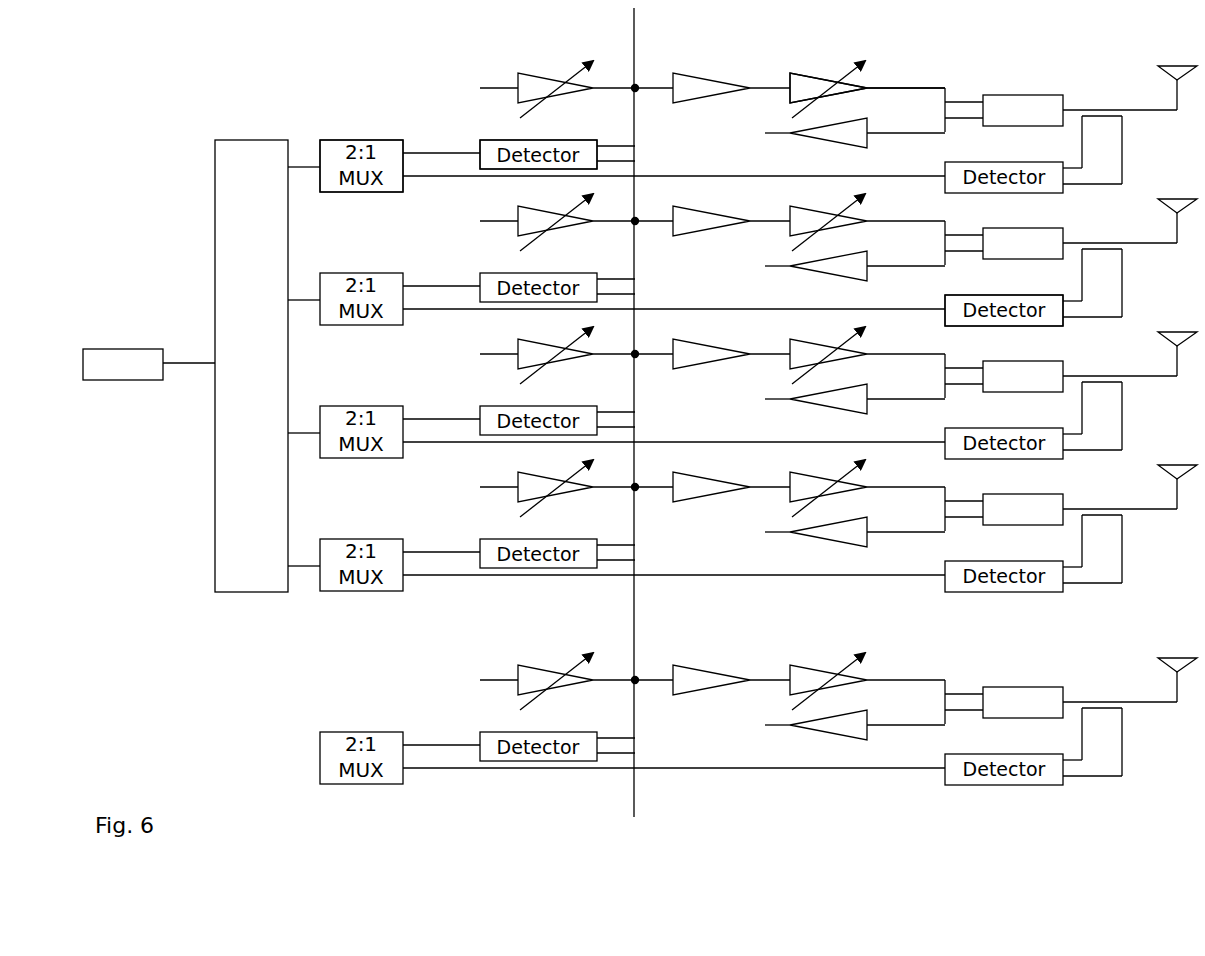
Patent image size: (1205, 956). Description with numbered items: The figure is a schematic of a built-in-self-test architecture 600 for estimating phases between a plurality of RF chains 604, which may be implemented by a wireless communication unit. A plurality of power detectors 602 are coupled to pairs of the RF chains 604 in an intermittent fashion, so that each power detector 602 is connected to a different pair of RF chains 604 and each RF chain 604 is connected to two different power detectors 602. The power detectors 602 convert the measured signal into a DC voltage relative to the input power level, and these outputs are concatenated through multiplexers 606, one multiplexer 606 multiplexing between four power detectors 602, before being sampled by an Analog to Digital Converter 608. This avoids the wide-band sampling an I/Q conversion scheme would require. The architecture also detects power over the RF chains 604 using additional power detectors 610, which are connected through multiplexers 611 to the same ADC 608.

The built-in-self-test (BIST) architecture 600 is at (72, 662).
The power detector 602 is at (515, 140).
The RF chain 604 is at (910, 87).
The multiplexer 606 is at (278, 140).
The Analog to Digital Converter (ADC) 608 is at (138, 383).
The power detector 610 is at (1038, 325).
The multiplexer 611 is at (368, 140).